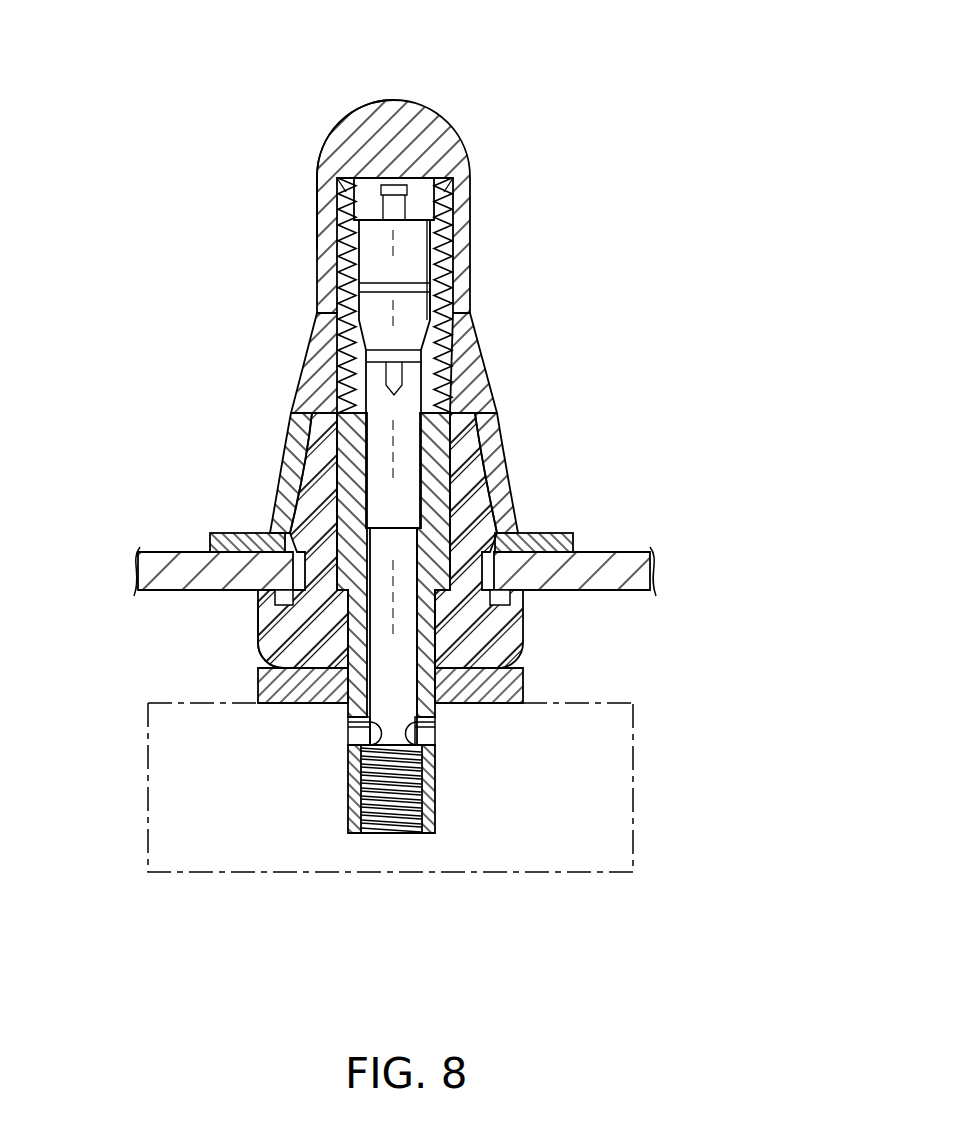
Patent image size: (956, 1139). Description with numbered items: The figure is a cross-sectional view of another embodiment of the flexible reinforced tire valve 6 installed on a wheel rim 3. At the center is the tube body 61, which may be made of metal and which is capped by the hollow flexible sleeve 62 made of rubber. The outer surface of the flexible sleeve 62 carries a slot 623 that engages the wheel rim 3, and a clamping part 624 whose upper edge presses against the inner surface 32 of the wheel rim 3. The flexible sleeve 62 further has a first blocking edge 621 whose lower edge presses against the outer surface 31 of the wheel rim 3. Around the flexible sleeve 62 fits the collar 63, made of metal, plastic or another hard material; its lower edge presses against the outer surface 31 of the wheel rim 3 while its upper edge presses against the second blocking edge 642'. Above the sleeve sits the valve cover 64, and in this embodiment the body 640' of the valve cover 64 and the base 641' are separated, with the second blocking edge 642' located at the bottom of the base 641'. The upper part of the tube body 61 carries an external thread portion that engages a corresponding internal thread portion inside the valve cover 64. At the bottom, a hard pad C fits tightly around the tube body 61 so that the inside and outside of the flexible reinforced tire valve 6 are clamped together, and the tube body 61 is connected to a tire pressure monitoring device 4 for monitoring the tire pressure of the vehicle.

The wheel rim 3 is at (414, 521).
The outer surface 31 is at (162, 552).
The inner surface 32 is at (610, 593).
The tire pressure monitoring device 4 is at (148, 752).
The flexible reinforced tire valve 6 is at (427, 420).
The tube body 61 is at (347, 287).
The flexible sleeve 62 is at (379, 565).
The first blocking edge 621 is at (512, 550).
The slot 623 is at (297, 550).
The clamping part 624 is at (275, 633).
The collar 63 is at (287, 470).
The valve cover 64 is at (447, 210).
The body 640' is at (294, 165).
The base 641' is at (240, 357).
The second blocking edge 642' is at (549, 370).
The hard pad C is at (525, 670).